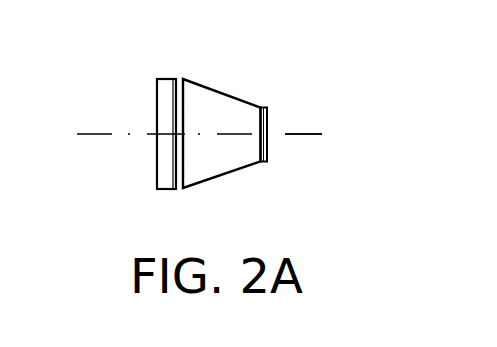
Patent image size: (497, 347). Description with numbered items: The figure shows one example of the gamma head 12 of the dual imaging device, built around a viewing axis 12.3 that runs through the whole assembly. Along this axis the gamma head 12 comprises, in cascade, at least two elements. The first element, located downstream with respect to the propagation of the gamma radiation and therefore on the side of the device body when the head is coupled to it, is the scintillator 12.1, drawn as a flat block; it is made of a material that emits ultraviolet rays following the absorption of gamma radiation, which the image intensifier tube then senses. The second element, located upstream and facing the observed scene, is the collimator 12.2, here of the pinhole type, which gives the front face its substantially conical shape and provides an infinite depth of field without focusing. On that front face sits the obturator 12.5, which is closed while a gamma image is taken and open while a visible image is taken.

The gamma head 12 is at (195, 141).
The scintillator 12.1 is at (167, 105).
The collimator 12.2 is at (213, 97).
The viewing axis 12.3 is at (291, 135).
The obturator 12.5 is at (264, 106).